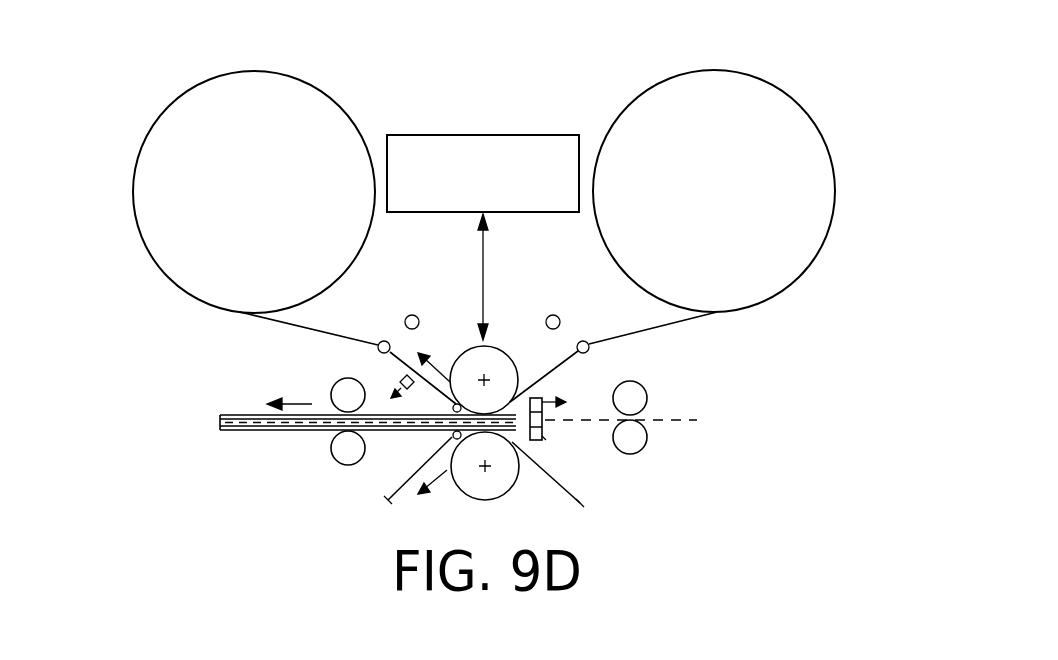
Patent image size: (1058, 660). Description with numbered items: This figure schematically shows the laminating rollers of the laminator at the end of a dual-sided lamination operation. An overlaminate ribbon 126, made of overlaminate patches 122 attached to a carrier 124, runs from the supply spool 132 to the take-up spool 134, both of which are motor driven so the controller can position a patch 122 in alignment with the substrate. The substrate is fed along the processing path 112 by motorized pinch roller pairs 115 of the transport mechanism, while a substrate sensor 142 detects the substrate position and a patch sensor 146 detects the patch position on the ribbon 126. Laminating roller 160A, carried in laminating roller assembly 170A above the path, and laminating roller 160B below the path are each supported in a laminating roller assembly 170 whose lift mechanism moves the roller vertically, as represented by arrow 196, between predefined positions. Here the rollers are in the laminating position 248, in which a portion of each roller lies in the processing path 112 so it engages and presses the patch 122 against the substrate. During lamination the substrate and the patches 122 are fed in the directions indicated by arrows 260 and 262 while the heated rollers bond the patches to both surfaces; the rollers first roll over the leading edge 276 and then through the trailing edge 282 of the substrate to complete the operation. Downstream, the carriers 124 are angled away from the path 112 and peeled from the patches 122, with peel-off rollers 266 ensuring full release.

The take-up spool 134 is at (173, 127).
The supply spool 132 is at (805, 120).
The laminating roller assembly 170 is at (518, 135).
The laminating roller assembly 170A is at (400, 120).
The arrow 196 is at (485, 273).
The laminating roller 160A is at (503, 352).
The laminating roller 160B is at (499, 500).
The overlaminate patch 122 is at (236, 415).
The leading edge 276 is at (218, 421).
The overlaminate ribbon 126 is at (660, 330).
The carrier 124 is at (352, 333).
The arrow 262 is at (430, 360).
The patch sensor 146 is at (402, 378).
The peel-off roller 266 is at (452, 407).
The arrow 260 is at (288, 402).
The motorized pinch roller pair 115 is at (316, 457).
The trailing edge 282 is at (535, 397).
The substrate sensor 142 is at (544, 437).
The processing path 112 is at (685, 416).
The laminating position 248 is at (548, 347).